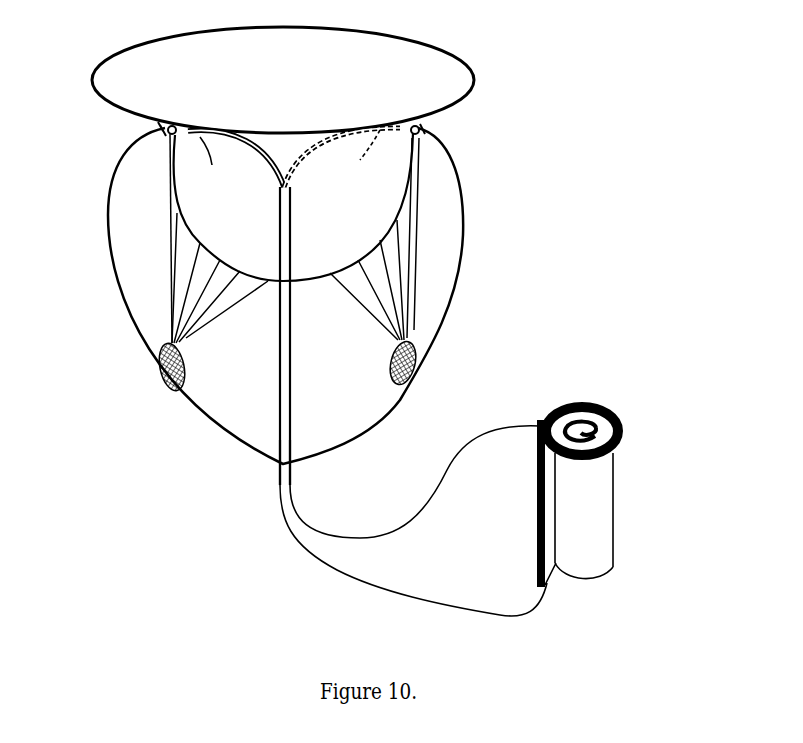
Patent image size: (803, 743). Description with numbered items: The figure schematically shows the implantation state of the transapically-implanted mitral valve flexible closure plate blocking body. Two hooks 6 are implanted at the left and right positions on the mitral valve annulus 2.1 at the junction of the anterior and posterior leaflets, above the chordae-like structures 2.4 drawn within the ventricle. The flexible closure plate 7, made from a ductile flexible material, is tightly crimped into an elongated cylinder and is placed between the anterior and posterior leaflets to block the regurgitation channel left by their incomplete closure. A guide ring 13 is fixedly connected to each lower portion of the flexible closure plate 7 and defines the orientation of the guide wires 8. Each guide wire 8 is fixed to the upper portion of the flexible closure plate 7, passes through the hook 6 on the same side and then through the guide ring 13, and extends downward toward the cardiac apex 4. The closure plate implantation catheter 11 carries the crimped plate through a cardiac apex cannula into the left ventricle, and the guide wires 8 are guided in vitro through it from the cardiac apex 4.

The hook 6 is at (178, 128).
The mitral valve annulus 2.1 is at (382, 200).
The chordae tendineae 2.4 is at (392, 295).
The closure plate implantation catheter 11 is at (280, 418).
The cardiac apex 4 is at (278, 462).
The guide wire 8 is at (373, 538).
The flexible closure plate 7 is at (562, 403).
The guide ring 13 is at (602, 407).